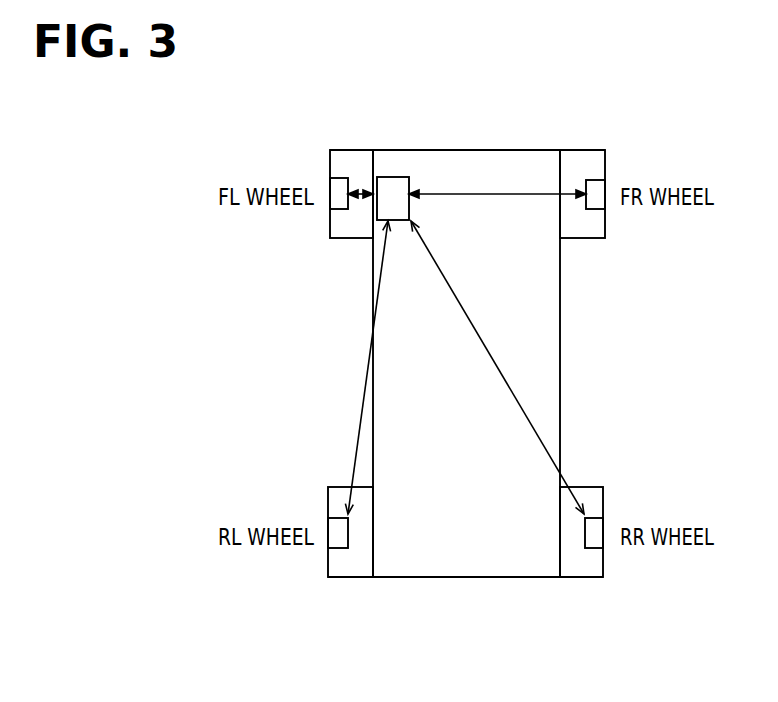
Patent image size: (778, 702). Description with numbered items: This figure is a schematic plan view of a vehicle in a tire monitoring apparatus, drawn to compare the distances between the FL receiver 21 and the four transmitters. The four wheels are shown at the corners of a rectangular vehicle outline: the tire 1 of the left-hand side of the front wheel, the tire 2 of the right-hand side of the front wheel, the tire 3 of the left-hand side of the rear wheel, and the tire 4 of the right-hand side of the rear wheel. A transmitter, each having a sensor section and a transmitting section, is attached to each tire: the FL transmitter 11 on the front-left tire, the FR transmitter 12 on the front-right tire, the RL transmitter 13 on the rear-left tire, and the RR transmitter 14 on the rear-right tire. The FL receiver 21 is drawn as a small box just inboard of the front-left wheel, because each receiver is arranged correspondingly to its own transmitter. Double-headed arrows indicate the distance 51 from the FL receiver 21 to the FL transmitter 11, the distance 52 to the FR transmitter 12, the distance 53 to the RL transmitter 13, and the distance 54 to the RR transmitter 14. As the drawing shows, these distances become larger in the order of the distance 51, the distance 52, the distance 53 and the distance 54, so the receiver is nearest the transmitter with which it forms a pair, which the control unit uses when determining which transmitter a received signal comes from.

The tire 1 is at (333, 240).
The tire 2 is at (605, 150).
The tire 3 is at (328, 577).
The tire 4 is at (605, 577).
The FL transmitter 11 is at (340, 183).
The FR transmitter 12 is at (590, 185).
The RL transmitter 13 is at (340, 540).
The RR transmitter 14 is at (592, 542).
The FL receiver 21 is at (400, 177).
The distance 51 is at (362, 187).
The distance 52 is at (498, 194).
The distance 53 is at (368, 365).
The distance 54 is at (493, 362).